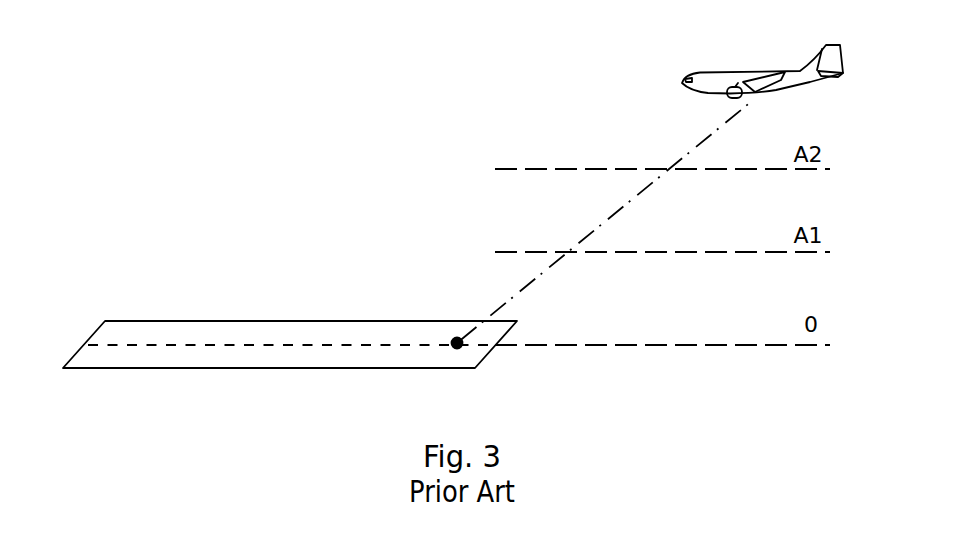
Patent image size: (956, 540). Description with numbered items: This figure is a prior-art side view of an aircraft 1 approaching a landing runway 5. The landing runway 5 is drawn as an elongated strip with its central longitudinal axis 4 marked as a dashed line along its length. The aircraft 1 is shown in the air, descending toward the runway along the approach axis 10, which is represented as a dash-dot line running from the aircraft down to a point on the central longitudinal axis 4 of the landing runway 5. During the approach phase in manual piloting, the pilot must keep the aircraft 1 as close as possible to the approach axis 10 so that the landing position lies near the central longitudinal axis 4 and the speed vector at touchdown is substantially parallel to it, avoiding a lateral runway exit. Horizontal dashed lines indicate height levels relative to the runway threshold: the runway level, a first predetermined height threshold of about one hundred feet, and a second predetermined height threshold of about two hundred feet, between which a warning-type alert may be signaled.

The aircraft 1 is at (723, 72).
The central longitudinal axis 4 is at (226, 345).
The landing runway 5 is at (145, 321).
The approach axis 10 is at (703, 143).